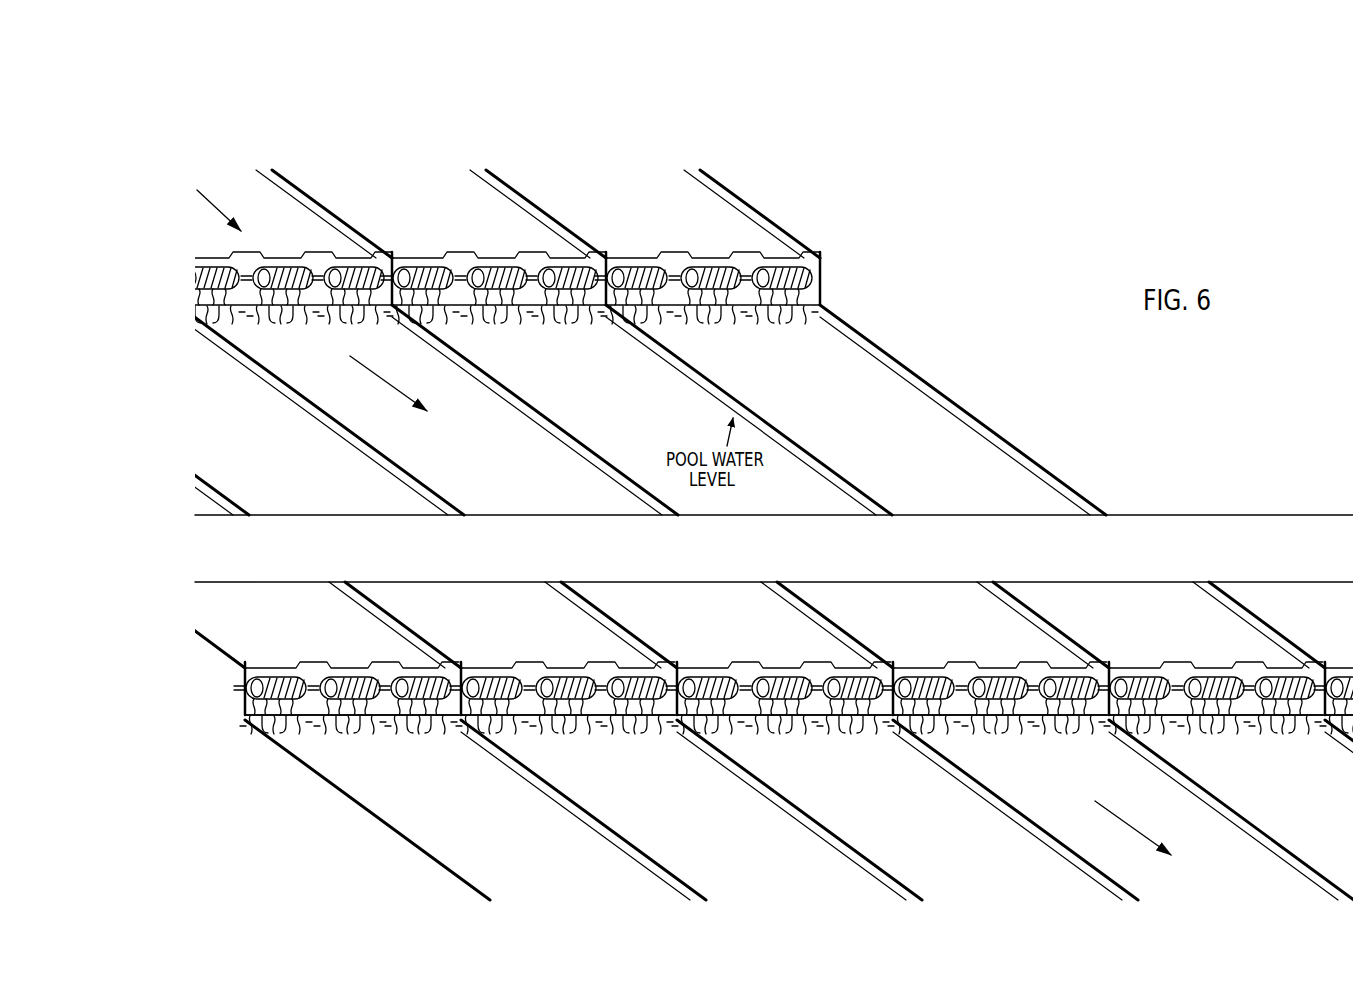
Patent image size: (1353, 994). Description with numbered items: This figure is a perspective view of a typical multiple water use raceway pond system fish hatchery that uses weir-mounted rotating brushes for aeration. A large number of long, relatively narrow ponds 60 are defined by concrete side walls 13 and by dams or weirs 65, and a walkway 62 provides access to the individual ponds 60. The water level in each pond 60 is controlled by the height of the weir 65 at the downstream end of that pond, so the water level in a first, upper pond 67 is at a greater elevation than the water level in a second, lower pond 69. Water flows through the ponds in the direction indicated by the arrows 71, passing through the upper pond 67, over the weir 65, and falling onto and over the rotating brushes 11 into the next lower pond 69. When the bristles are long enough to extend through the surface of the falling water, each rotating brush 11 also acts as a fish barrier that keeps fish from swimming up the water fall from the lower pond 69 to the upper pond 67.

The rotating brush 11 is at (348, 280).
The concrete side wall 13 is at (950, 390).
The pond 60 is at (838, 408).
The walkway 62 is at (405, 561).
The weir 65 is at (760, 463).
The upper pond 67 is at (200, 251).
The lower pond 69 is at (528, 495).
The arrow 71 is at (224, 205).